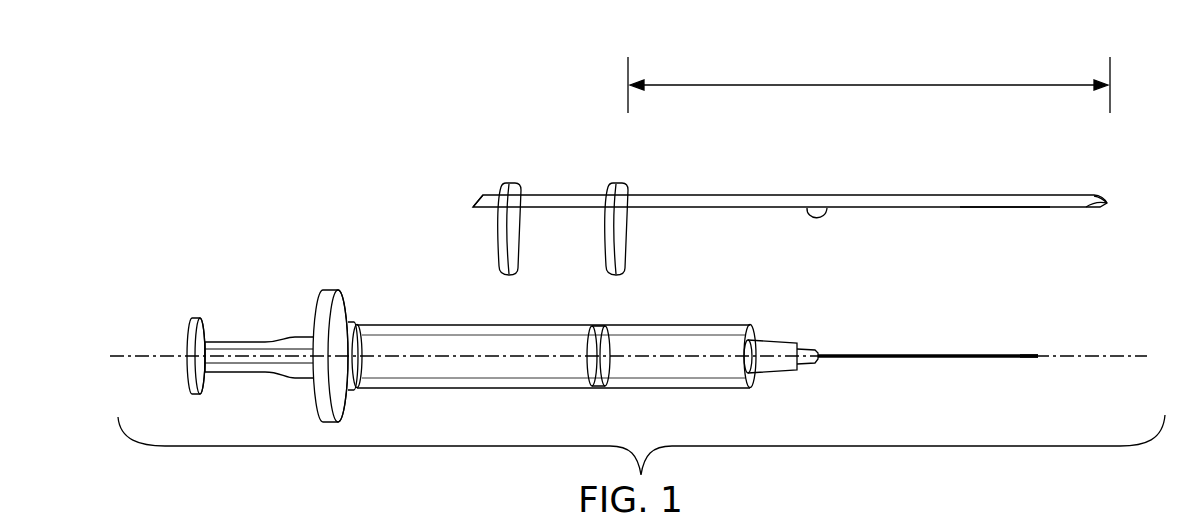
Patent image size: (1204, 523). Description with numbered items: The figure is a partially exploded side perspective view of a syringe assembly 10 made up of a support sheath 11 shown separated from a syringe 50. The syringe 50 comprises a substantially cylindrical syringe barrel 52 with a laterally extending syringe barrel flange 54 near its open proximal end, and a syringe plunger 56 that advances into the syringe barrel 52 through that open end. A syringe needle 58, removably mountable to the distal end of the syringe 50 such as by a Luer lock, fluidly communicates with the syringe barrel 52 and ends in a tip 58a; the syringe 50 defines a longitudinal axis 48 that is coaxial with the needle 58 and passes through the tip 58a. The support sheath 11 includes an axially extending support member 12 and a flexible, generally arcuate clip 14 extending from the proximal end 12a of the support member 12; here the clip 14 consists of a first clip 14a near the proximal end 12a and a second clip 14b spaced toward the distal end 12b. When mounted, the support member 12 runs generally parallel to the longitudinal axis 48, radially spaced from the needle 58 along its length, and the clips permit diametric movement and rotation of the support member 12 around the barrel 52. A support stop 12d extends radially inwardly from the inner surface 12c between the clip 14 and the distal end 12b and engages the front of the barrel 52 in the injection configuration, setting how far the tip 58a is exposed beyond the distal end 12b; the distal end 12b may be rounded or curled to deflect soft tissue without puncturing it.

The syringe assembly 10 is at (268, 266).
The support sheath 11 is at (495, 172).
The support member 12 is at (829, 195).
The proximal end of support member 12a is at (478, 204).
The distal end of support member 12b is at (1112, 202).
The inner surface 12c is at (1004, 209).
The support stop 12d is at (828, 210).
The arcuate clip 14 is at (579, 152).
The first clip 14a is at (509, 182).
The second clip 14b is at (616, 182).
The longitudinal axis 48 is at (1116, 355).
The syringe 50 is at (769, 319).
The syringe barrel 52 is at (415, 324).
The syringe barrel flange 54 is at (330, 290).
The syringe plunger 56 is at (448, 361).
The syringe needle 58 is at (864, 352).
The needle tip 58a is at (1038, 356).